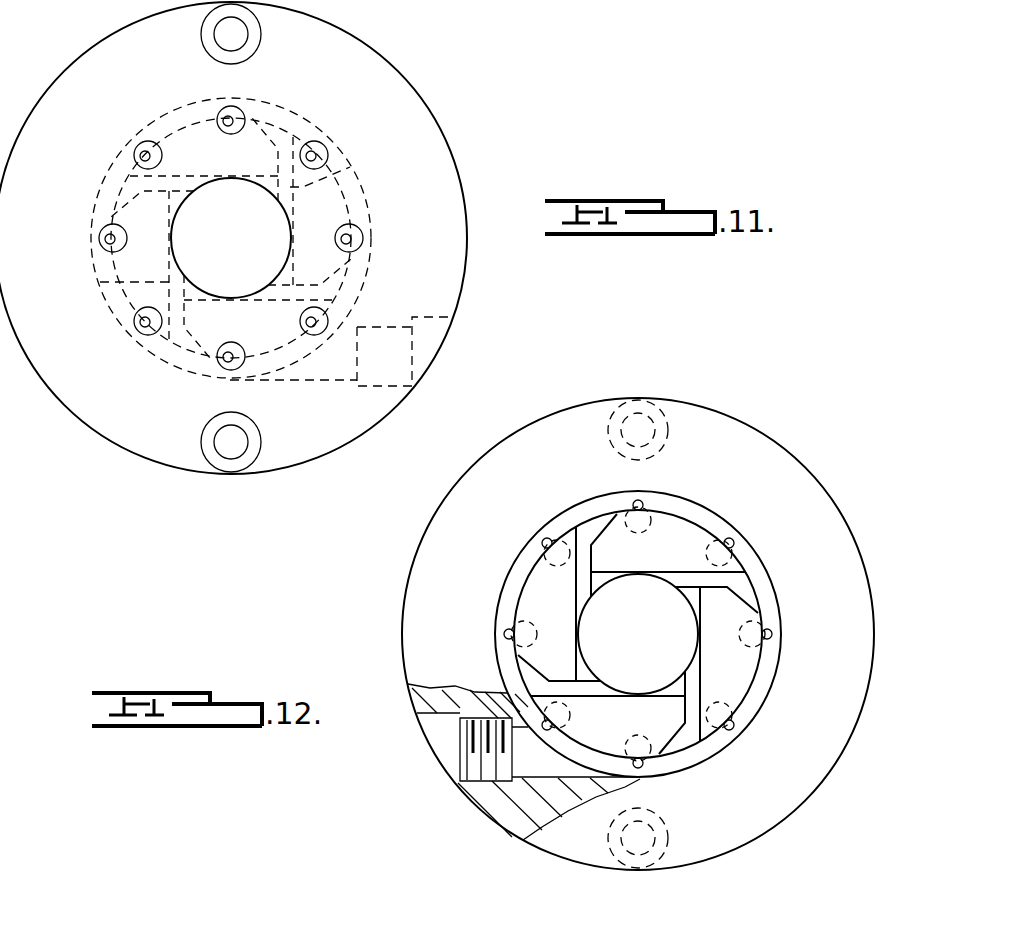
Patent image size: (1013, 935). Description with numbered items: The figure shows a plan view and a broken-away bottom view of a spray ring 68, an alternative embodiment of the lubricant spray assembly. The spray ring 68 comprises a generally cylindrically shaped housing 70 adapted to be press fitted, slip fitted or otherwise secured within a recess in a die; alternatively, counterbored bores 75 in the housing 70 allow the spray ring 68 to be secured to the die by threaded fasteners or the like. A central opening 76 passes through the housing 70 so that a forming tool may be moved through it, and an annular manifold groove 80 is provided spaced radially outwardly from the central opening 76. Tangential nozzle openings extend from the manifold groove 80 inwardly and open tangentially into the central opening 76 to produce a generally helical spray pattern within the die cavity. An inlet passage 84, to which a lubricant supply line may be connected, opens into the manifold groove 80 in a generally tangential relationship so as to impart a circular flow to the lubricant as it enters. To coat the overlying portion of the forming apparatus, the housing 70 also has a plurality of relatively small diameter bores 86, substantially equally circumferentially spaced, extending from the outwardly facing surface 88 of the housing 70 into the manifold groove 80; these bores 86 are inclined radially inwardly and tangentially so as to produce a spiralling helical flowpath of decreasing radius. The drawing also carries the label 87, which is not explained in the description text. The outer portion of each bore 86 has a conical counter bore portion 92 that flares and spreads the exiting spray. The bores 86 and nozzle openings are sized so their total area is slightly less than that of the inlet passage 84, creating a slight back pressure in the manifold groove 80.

In FIG. 11, the spray ring 68 is at (484, 170).
In FIG. 12, the spray ring 68 is at (740, 394).
In FIG. 11, the housing 70 is at (442, 271).
In FIG. 12, the housing 70 is at (638, 634).
In FIG. 11, the counterbored bores 75 is at (229, 445).
In FIG. 12, the counterbored bores 75 is at (641, 404).
In FIG. 11, the central opening 76 is at (236, 180).
In FIG. 12, the central opening 76 is at (636, 576).
In FIG. 11, the annular manifold groove 80 is at (362, 280).
In FIG. 12, the inlet passage 84 is at (438, 740).
In FIG. 11, the small diameter bores 86 is at (235, 357).
In FIG. 12, the small diameter bores 86 is at (554, 538).
In FIG. 11, the iris blades 87 is at (330, 185).
In FIG. 12, the iris blades 87 is at (742, 587).
In FIG. 11, the outwardly facing surface 88 is at (92, 402).
In FIG. 12, the outwardly facing surface 88 is at (638, 634).
In FIG. 11, the conical counter bore portion 92 is at (214, 360).
In FIG. 12, the conical counter bore portion 92 is at (546, 556).